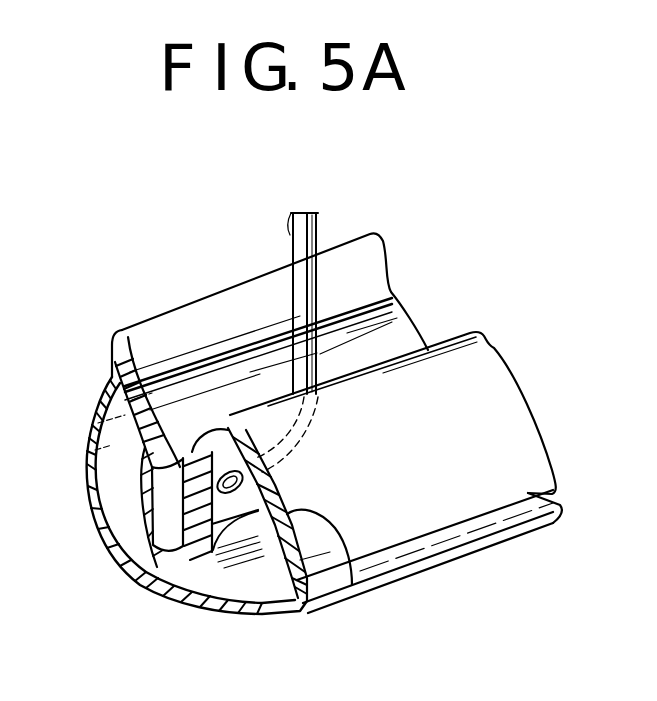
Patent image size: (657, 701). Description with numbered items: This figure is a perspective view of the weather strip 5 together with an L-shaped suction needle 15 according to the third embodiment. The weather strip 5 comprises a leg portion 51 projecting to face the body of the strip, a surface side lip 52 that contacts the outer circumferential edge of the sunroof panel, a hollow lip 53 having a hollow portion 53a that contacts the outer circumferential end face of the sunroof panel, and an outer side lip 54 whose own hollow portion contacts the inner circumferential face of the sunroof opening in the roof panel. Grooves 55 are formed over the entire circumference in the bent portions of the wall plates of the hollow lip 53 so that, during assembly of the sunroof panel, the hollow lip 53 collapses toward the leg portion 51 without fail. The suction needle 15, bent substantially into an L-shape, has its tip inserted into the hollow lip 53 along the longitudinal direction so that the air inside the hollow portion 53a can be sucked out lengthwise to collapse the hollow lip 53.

The weather strip 5 is at (144, 307).
The suction needle 15 is at (292, 230).
The leg portion 51 is at (183, 500).
The surface side lip 52 is at (505, 522).
The hollow lip 53 is at (507, 371).
The hollow portion 53a is at (352, 585).
The outer side lip 54 is at (88, 483).
The grooves 55 is at (232, 428).